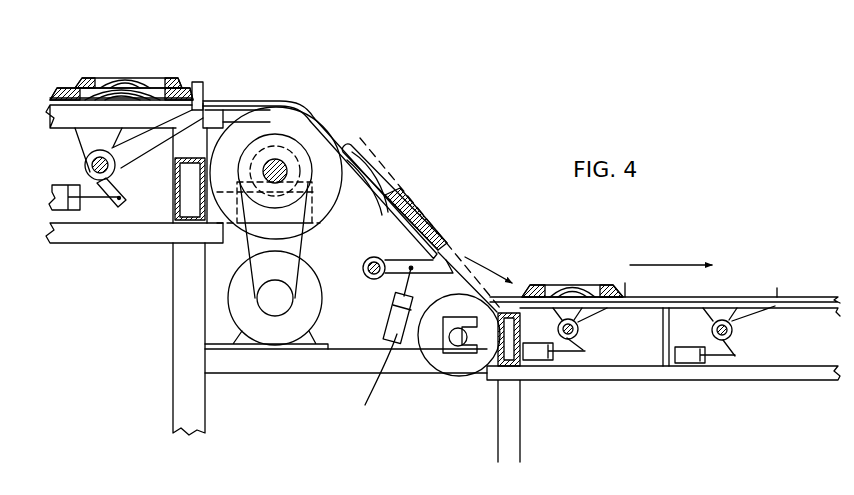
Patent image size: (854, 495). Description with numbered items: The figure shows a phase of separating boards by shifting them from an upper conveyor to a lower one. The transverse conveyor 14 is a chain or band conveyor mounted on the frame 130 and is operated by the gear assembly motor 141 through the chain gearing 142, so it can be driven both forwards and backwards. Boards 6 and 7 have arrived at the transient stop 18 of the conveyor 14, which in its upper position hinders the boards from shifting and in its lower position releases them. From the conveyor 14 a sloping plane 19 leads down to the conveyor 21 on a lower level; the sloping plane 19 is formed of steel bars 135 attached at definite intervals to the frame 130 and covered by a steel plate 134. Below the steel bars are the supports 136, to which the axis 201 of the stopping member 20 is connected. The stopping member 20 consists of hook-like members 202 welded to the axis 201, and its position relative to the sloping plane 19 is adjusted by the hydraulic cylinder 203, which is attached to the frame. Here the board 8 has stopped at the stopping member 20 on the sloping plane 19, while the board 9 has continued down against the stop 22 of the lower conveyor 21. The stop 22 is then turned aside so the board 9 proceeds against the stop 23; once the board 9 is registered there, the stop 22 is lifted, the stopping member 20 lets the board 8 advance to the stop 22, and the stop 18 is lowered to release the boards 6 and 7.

The board 6 is at (153, 80).
The board 7 is at (97, 80).
The board 8 is at (358, 158).
The board 9 is at (548, 285).
The transverse conveyor 14 is at (232, 103).
The transient stop 18 is at (216, 98).
The sloping plane 19 is at (390, 167).
The stopping member 20 is at (386, 313).
The conveyor 21 is at (553, 376).
The transient stop 22 is at (593, 320).
The transient stop 23 is at (755, 322).
The frame 130 is at (168, 384).
The steel plate 134 is at (341, 144).
The steel bar 135 is at (388, 213).
The support 136 is at (385, 250).
The gear assembly motor 141 is at (275, 335).
The chain gearing 142 is at (246, 256).
The axis 201 is at (375, 278).
The hook-like member 202 is at (447, 246).
The hydraulic cylinder 203 is at (368, 409).